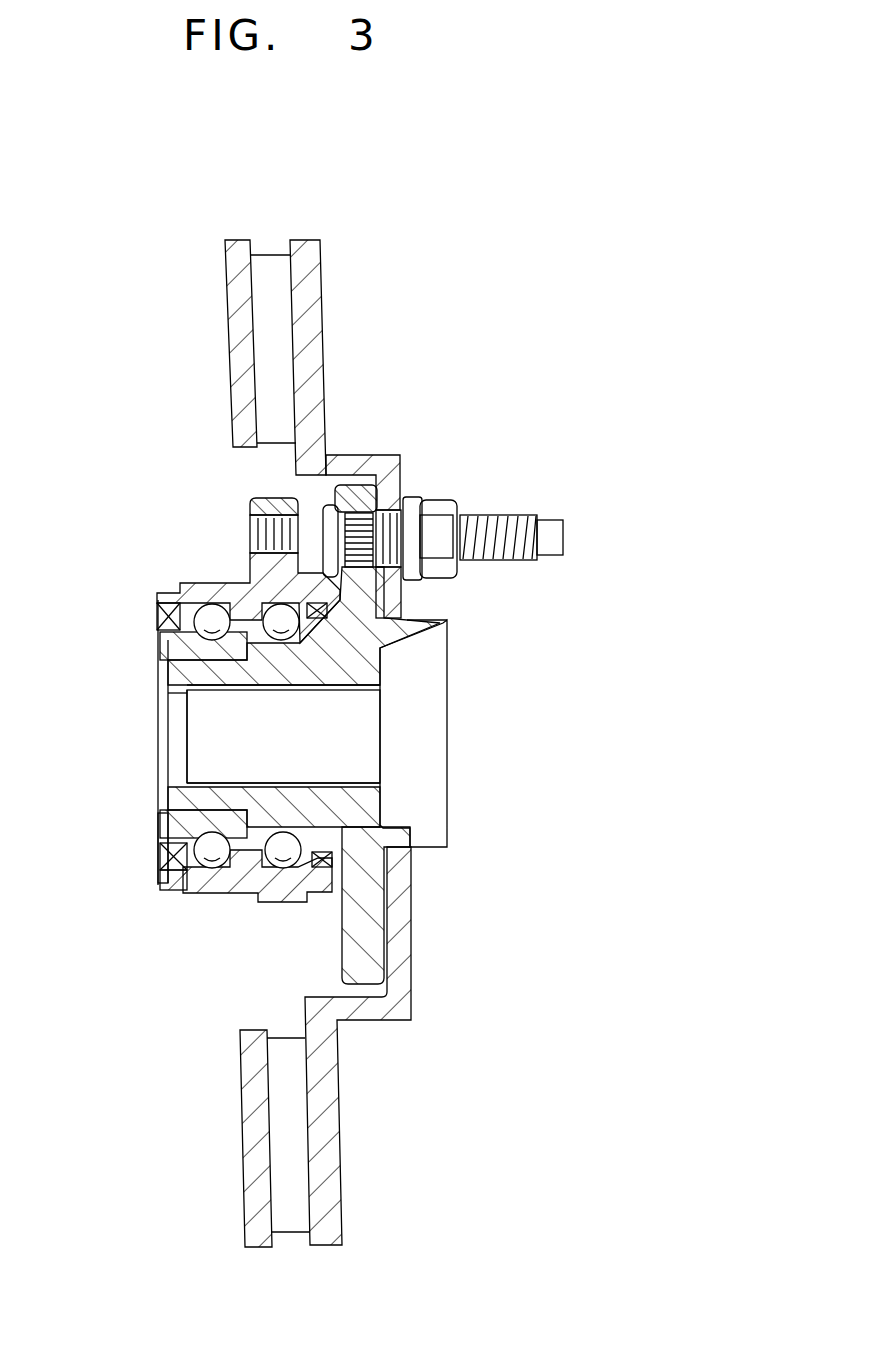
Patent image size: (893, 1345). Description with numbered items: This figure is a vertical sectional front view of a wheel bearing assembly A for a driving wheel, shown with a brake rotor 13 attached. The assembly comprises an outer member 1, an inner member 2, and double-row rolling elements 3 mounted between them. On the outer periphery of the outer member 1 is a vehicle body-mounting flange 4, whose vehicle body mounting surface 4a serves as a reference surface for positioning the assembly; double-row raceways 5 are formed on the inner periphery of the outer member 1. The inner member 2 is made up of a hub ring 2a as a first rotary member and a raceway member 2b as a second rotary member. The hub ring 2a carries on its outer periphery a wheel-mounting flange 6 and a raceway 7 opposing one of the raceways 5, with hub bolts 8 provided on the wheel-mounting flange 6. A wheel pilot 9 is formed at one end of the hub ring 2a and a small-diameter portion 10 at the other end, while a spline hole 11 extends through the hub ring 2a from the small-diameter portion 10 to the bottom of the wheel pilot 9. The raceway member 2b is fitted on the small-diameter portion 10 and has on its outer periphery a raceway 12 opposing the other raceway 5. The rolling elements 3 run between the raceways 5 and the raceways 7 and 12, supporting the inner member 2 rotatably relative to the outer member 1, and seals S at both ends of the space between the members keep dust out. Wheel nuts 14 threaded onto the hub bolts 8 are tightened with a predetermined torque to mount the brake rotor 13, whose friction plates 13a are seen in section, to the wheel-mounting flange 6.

The outer member 1 is at (218, 582).
The inner member 2 is at (296, 775).
The hub ring 2a is at (444, 721).
The raceway member 2b is at (180, 637).
The double-row rolling elements 3 is at (256, 782).
The vehicle body-mounting flange 4 is at (219, 499).
The vehicle body mounting surface 4a is at (258, 505).
The double-row raceways 5 is at (160, 615).
The wheel-mounting flange 6 is at (355, 490).
The raceway 7 is at (285, 645).
The hub bolts 8 is at (515, 520).
The wheel pilot 9 is at (440, 623).
The small-diameter portion 10 is at (185, 783).
The spline hole 11 is at (170, 695).
The raceway 12 is at (175, 855).
The brake rotor 13 is at (267, 701).
The rotor friction plates 13a is at (232, 295).
The wheel nuts 14 is at (428, 512).
The wheel bearing assembly A is at (150, 560).
The seals S is at (168, 882).